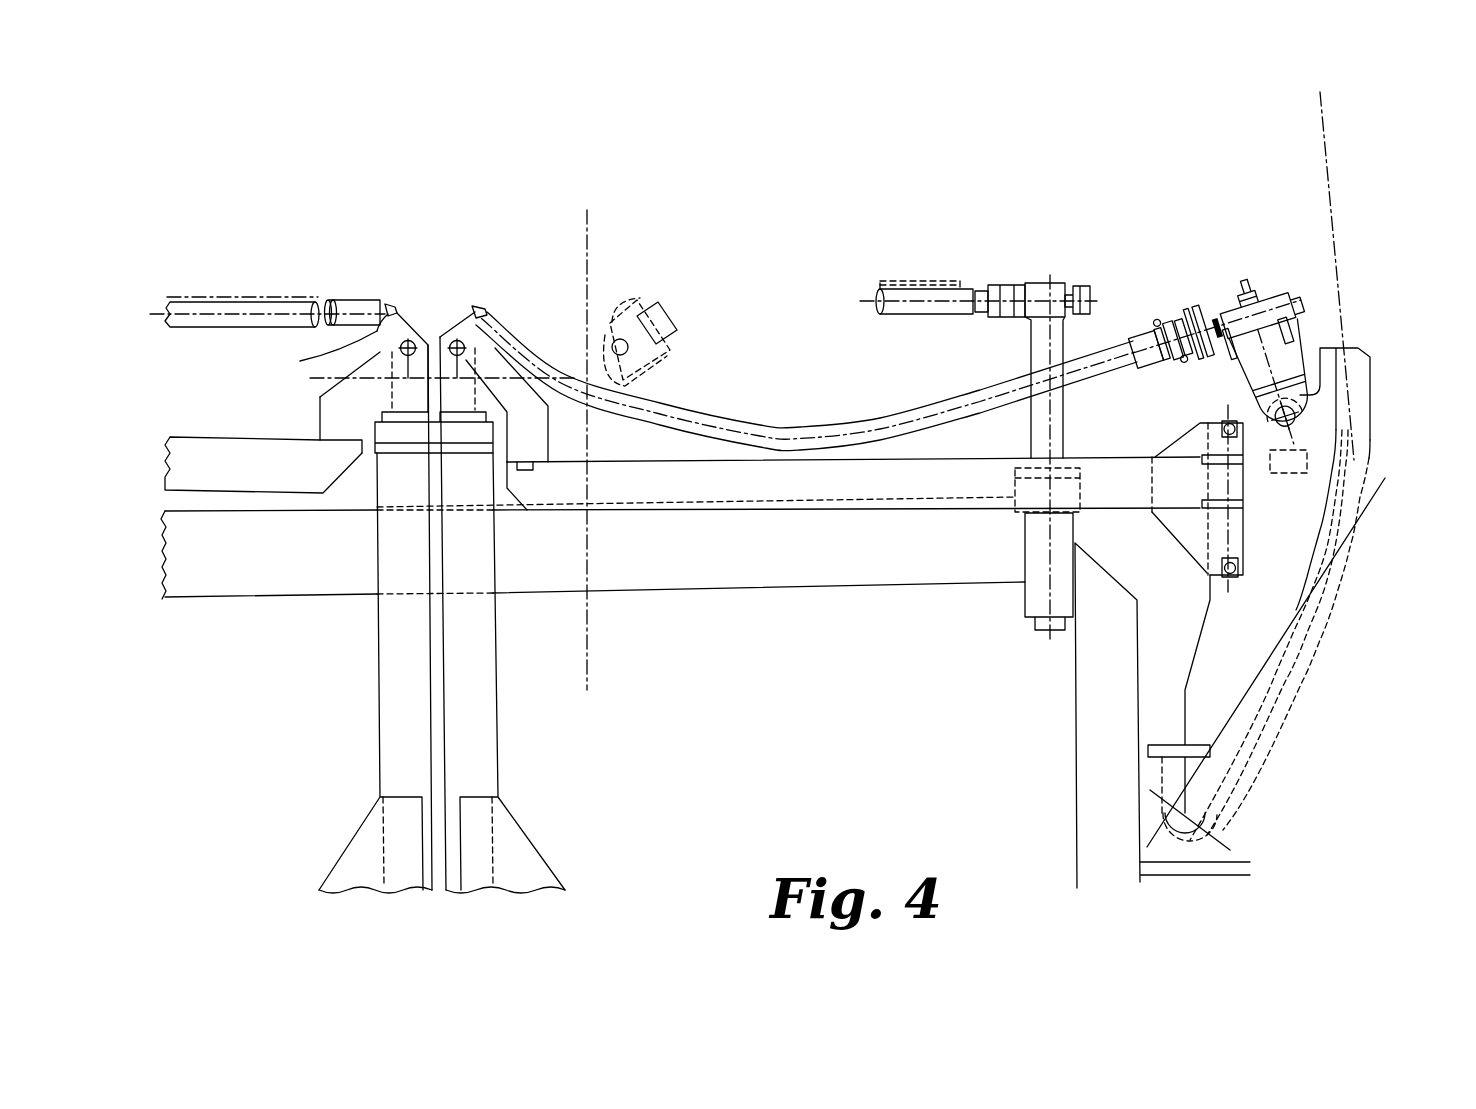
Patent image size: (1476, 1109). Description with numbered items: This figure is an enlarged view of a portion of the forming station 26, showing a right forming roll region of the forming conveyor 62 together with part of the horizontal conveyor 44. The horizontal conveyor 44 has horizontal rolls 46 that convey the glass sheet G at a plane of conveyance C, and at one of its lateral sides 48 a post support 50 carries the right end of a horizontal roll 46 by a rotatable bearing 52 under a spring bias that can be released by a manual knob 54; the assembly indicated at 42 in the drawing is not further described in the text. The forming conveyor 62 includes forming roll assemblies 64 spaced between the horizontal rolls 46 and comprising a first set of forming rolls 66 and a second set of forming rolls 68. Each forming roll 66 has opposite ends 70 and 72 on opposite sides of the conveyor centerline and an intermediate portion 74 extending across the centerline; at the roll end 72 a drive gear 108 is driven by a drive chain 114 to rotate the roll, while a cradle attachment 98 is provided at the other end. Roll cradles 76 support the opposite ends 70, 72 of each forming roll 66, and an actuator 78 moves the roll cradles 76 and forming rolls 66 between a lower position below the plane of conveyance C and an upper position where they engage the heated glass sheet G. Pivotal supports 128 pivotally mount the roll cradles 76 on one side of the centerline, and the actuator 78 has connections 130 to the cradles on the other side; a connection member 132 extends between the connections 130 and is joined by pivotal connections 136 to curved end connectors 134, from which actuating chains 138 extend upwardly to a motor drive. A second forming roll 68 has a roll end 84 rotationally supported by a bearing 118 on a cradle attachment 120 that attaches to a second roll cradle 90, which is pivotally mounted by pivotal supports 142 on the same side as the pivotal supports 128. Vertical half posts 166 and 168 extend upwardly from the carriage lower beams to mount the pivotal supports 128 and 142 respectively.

The forming station 26 is at (1293, 267).
The tie rod assembly 42 is at (1058, 385).
The horizontal conveyor 44 is at (932, 277).
The horizontal rolls 46 is at (907, 292).
The lateral sides 48 is at (985, 320).
The post supports 50 is at (1040, 284).
The rotatable bearing 52 is at (1010, 284).
The manual knob 54 is at (1097, 284).
The forming conveyor 62 is at (1259, 302).
The forming roll assemblies 64 is at (1125, 393).
The first set of forming rolls 66 is at (680, 407).
The second set of forming rolls 68 is at (330, 281).
The roll end 70 is at (806, 319).
The roll end 72 is at (1156, 345).
The intermediate portion 74 is at (810, 427).
The roll cradles 76 is at (696, 531).
The actuator 78 is at (1302, 572).
The roll end 84 is at (383, 296).
The second set of roll cradles 90 is at (288, 463).
The cradle attachment 98 is at (482, 318).
The drive gear 108 is at (1173, 340).
The drive chain 114 is at (1205, 330).
The bearing 118 is at (300, 361).
The cradle attachment 120 is at (397, 303).
The pivotal supports 128 is at (440, 335).
The connections 130 is at (1258, 336).
The connection member 132 is at (1281, 385).
The curved end connectors 134 is at (1297, 543).
The pivotal connections 136 is at (1284, 416).
The actuating chains 138 is at (1334, 178).
The pivotal supports 142 is at (362, 365).
The vertical half post 166 is at (478, 708).
The vertical half post 168 is at (405, 710).
The glass sheet G is at (266, 293).
The plane of conveyance C is at (962, 283).